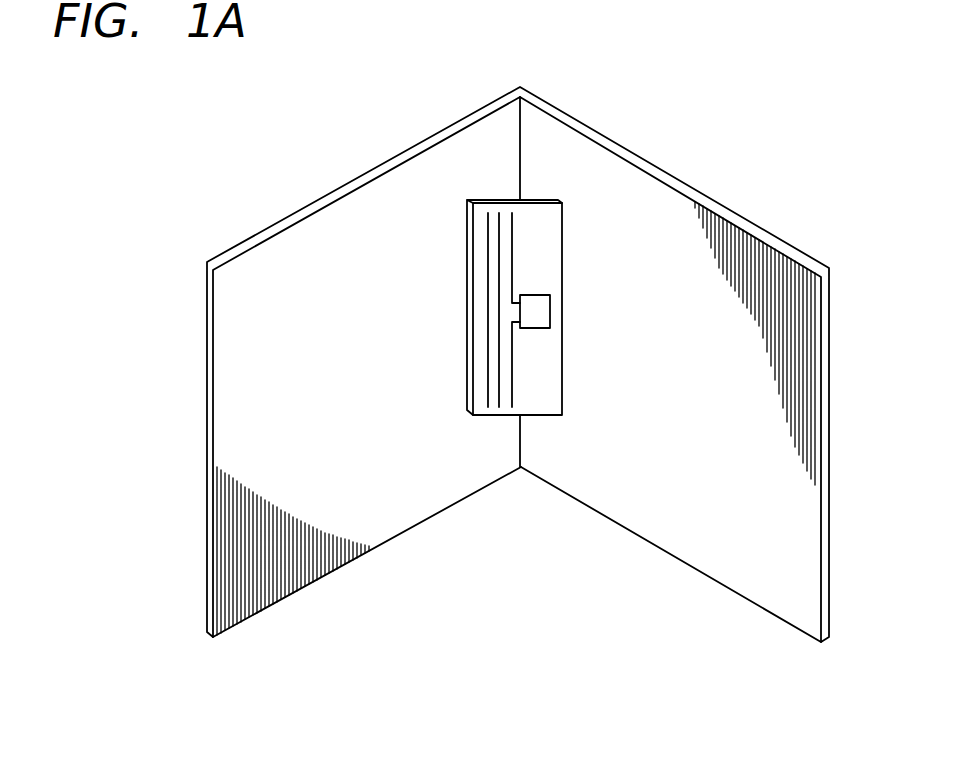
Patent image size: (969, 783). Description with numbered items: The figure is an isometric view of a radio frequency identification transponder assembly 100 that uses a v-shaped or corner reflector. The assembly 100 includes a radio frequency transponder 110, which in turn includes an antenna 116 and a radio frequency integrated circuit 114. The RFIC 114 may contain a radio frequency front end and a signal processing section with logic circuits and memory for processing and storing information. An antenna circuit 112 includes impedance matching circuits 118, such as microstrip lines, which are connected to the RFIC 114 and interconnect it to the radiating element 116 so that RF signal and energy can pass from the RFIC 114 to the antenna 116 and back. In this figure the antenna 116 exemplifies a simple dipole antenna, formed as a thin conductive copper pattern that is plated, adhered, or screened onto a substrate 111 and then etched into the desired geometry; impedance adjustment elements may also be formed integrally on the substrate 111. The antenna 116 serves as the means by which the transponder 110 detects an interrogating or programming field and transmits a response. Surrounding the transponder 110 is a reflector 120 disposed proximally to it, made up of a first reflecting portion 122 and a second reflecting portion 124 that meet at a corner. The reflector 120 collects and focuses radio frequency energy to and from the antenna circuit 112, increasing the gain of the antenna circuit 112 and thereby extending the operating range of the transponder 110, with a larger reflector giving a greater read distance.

The radio frequency identification transponder assembly 100 is at (688, 92).
The radio frequency transponder 110 is at (562, 338).
The substrate 111 is at (552, 375).
The antenna circuit 112 is at (500, 352).
The radio frequency integrated circuit 114 is at (550, 308).
The antenna 116 is at (512, 237).
The impedance matching circuits 118 is at (490, 246).
The reflector 120 is at (293, 255).
The first reflecting portion 122 is at (390, 522).
The second reflecting portion 124 is at (705, 547).